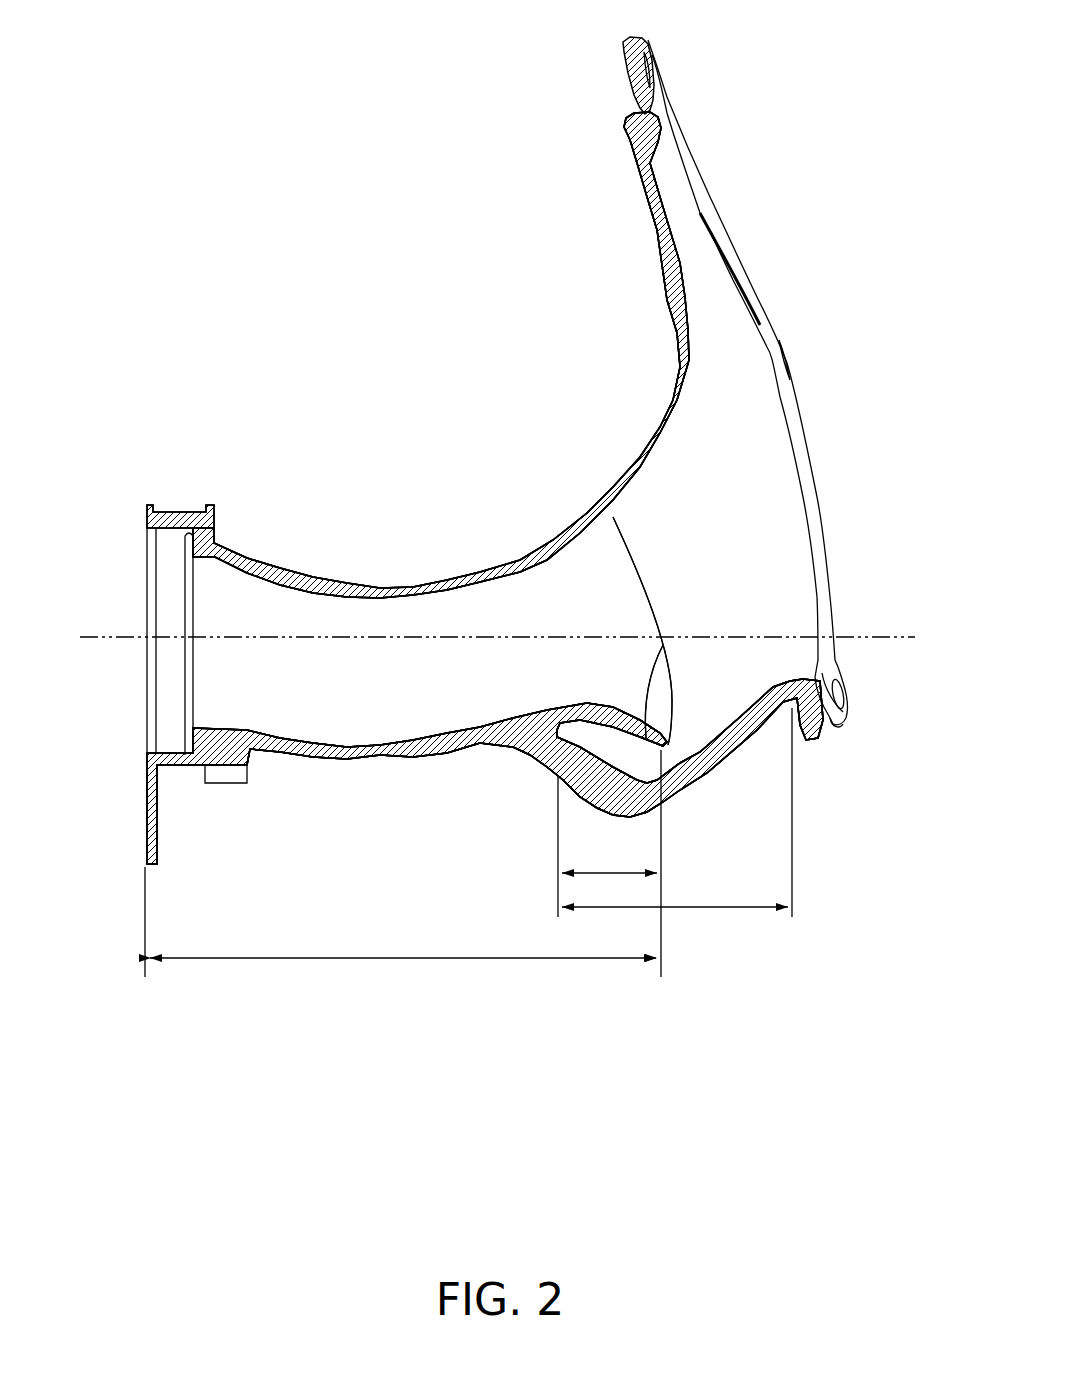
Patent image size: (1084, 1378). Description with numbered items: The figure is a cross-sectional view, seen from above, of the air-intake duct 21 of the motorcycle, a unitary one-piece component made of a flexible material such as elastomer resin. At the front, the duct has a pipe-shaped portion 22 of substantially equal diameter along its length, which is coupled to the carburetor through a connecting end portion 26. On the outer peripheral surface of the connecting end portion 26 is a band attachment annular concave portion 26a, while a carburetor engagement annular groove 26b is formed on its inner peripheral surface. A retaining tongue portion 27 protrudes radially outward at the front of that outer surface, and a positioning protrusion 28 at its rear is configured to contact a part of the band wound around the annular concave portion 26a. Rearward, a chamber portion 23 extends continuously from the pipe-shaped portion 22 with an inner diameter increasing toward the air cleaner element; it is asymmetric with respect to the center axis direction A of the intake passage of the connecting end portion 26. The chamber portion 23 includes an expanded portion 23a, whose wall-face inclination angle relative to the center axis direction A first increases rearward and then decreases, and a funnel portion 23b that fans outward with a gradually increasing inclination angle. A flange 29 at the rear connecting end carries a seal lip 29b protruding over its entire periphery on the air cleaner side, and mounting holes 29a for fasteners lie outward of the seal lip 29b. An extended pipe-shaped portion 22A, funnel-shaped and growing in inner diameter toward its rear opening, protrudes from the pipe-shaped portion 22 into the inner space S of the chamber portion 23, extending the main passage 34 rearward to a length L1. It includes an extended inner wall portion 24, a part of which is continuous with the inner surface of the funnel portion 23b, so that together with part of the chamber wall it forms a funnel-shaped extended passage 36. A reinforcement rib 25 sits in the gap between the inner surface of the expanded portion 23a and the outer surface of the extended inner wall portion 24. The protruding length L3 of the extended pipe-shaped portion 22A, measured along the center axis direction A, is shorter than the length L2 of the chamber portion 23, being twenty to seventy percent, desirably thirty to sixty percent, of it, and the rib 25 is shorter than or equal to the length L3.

The air-intake duct 21 is at (344, 456).
The pipe-shaped portion 22 is at (380, 578).
The extended pipe-shaped portion 22A is at (600, 537).
The chamber portion 23 is at (670, 350).
The expanded portion 23a is at (667, 793).
The funnel portion 23b is at (667, 410).
The extended inner wall portion 24 is at (683, 753).
The reinforcement rib 25 is at (613, 753).
The connecting end portion 26 is at (147, 514).
The band attachment annular concave portion 26a is at (204, 511).
The carburetor engagement annular groove 26b is at (186, 538).
The retaining tongue portion 27 is at (146, 841).
The positioning protrusion 28 is at (225, 783).
The flange 29 is at (833, 730).
The mounting holes 29a is at (838, 700).
The seal lip 29b is at (848, 723).
The main passage 34 is at (400, 738).
The funnel-shaped extended passage 36 is at (620, 607).
The inner space S is at (653, 493).
The center axis direction A is at (106, 650).
The length of the main passage L1 is at (403, 874).
The length of the chamber portion L2 is at (677, 823).
The length of the extended pipe-shaped portion L3 is at (607, 847).